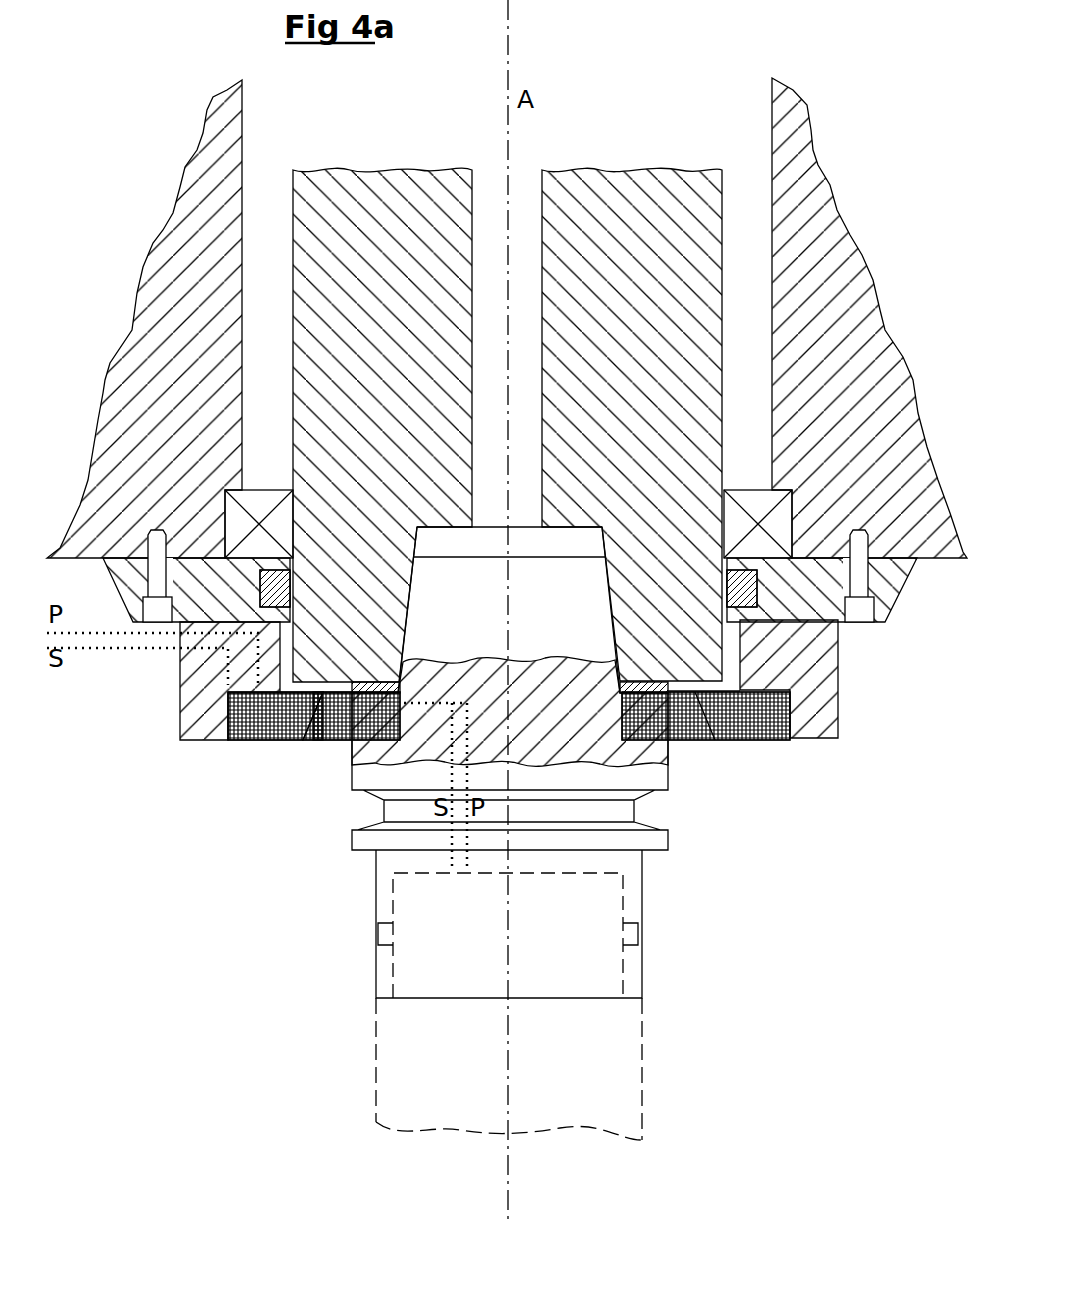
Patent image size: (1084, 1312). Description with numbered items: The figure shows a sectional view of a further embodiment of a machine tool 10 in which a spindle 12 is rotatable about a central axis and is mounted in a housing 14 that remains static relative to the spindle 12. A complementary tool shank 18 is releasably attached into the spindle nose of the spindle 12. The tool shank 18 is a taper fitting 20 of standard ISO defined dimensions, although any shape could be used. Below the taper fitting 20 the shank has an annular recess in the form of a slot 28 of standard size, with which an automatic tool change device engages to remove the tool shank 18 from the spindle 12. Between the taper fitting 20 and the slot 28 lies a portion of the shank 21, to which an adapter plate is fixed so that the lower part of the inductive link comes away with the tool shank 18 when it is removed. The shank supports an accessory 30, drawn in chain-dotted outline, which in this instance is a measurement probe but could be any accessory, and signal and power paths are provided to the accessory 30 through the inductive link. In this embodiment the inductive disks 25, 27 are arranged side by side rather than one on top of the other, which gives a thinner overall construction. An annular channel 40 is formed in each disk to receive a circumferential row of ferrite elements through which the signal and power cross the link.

The machine tool 10 is at (836, 114).
The spindle 12 is at (349, 167).
The housing 14 is at (178, 192).
The tool shank 18 is at (778, 938).
The taper fitting 20 is at (470, 648).
The portion of the shank 21 is at (578, 752).
The inductive disk 25 is at (262, 742).
The inductive disk 27 is at (332, 742).
The slot 28 is at (362, 808).
The accessory 30 is at (622, 1048).
The annular channel 40 is at (527, 710).